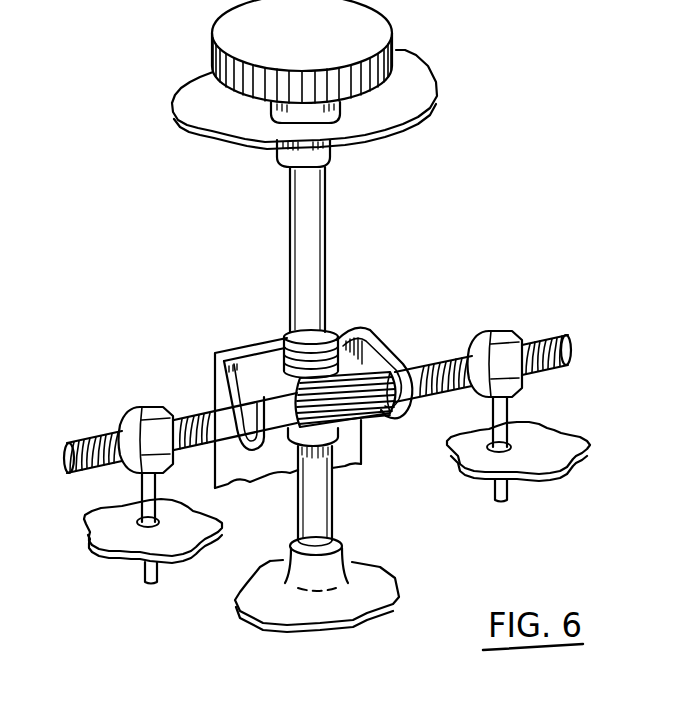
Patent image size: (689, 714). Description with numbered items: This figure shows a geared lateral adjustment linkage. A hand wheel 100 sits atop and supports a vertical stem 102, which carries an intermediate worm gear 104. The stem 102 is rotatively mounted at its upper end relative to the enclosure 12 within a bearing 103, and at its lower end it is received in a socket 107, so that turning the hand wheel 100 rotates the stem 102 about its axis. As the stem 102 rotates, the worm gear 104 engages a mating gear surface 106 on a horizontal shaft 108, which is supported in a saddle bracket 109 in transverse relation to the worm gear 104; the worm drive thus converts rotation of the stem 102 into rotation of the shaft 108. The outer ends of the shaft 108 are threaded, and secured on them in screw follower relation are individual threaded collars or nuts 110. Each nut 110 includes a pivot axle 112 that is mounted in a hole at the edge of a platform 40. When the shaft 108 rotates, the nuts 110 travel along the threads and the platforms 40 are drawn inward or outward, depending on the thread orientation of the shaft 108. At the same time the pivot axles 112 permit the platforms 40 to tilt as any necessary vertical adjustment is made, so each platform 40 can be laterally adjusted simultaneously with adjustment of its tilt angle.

The hand wheel 100 is at (330, 43).
The enclosure 12 is at (428, 88).
The bearing 103 is at (327, 162).
The stem 102 is at (300, 240).
The worm gear 104 is at (295, 345).
The saddle bracket 109 is at (215, 355).
The mating gear surface 106 is at (372, 372).
The shaft 108 is at (565, 333).
The threaded collar or nut 110 is at (135, 413).
The platform 40 is at (100, 528).
The pivot axle 112 is at (148, 578).
The socket 107 is at (350, 548).